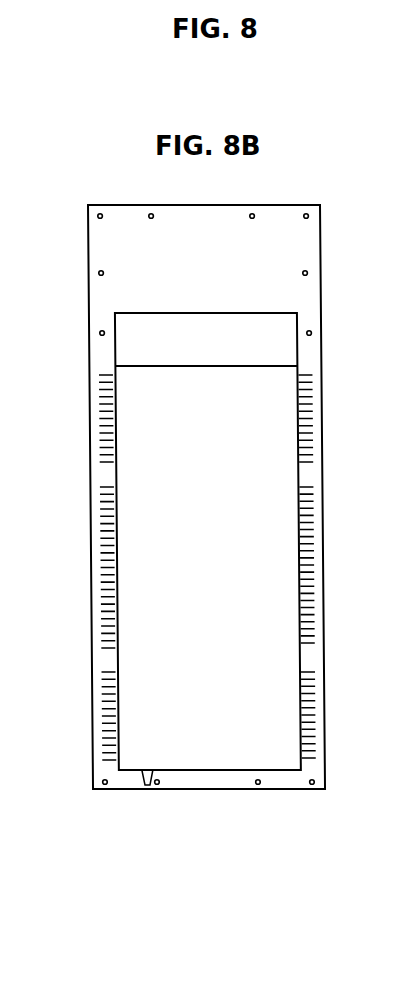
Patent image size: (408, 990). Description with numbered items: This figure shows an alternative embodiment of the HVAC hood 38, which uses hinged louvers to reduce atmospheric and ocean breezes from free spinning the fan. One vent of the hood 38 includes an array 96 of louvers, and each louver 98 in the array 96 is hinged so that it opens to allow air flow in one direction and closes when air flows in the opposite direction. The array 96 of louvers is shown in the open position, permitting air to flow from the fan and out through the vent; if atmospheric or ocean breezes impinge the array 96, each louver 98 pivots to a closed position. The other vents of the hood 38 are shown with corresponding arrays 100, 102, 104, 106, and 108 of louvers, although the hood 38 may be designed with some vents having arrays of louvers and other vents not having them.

The hood 38 is at (46, 924).
The louver 98 is at (305, 372).
The array of louvers 96 is at (334, 375).
The array of louvers 100 is at (335, 482).
The array of louvers 102 is at (335, 670).
The array of louvers 104 is at (81, 377).
The array of louvers 106 is at (81, 490).
The array of louvers 108 is at (82, 673).